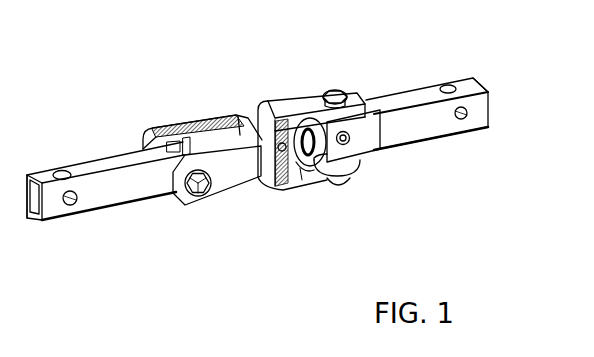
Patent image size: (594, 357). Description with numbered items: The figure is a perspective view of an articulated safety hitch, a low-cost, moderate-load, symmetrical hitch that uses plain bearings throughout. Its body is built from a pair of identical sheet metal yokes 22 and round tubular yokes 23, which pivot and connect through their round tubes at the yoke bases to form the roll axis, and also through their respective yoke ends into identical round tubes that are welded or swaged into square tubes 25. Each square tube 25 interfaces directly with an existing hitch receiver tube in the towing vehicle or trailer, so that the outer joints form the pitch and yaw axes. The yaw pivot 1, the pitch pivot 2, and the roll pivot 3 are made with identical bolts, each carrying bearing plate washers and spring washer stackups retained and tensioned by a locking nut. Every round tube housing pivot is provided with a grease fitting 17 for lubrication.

The yaw pivot 1 is at (337, 82).
The pitch pivot 2 is at (201, 197).
The roll pivot 3 is at (305, 187).
The grease fitting 17 is at (106, 156).
The sheet metal yoke 22 is at (178, 122).
The round tubular yoke 23 is at (268, 102).
The square tube 25 is at (54, 226).